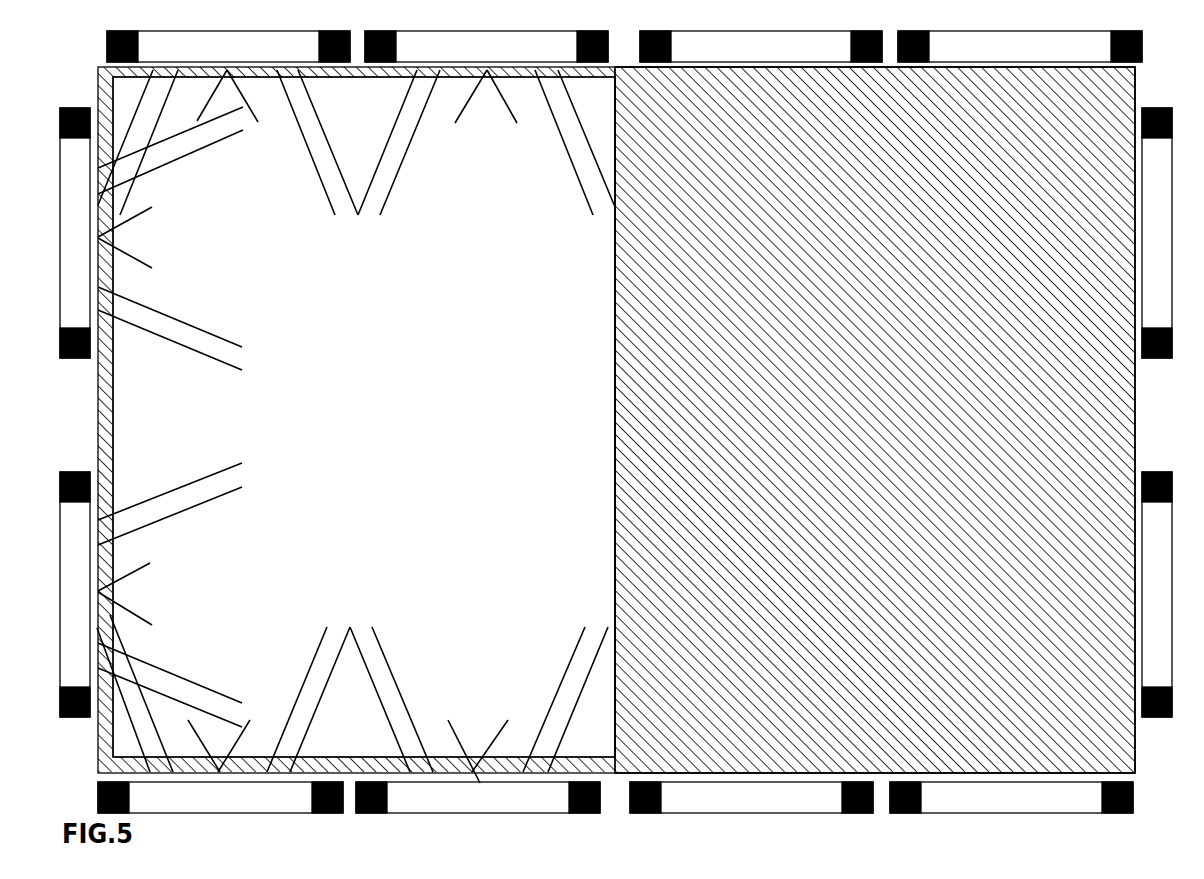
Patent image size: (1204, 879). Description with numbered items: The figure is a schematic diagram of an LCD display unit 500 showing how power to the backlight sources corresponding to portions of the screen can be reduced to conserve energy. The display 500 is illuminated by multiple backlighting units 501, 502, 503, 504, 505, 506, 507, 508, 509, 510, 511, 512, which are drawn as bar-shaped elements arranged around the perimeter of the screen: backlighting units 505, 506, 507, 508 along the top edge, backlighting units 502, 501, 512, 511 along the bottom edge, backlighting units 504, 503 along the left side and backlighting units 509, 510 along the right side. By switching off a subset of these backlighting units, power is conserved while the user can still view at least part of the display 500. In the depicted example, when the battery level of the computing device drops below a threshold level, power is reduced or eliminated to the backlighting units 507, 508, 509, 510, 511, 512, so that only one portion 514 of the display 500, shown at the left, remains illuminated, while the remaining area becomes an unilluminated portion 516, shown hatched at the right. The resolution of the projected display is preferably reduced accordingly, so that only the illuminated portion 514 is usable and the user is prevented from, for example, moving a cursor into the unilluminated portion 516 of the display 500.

The LCD display unit 500 is at (575, 321).
The backlighting unit 501 is at (461, 808).
The backlighting unit 502 is at (203, 808).
The backlighting unit 503 is at (85, 578).
The backlighting unit 504 is at (85, 216).
The backlighting unit 505 is at (211, 57).
The backlighting unit 506 is at (469, 57).
The backlighting unit 507 is at (744, 57).
The backlighting unit 508 is at (1003, 57).
The backlighting unit 509 is at (1167, 216).
The backlighting unit 510 is at (1167, 578).
The backlighting unit 511 is at (995, 808).
The backlighting unit 512 is at (735, 808).
The illuminated portion 514 is at (343, 423).
The unilluminated portion 516 is at (885, 428).